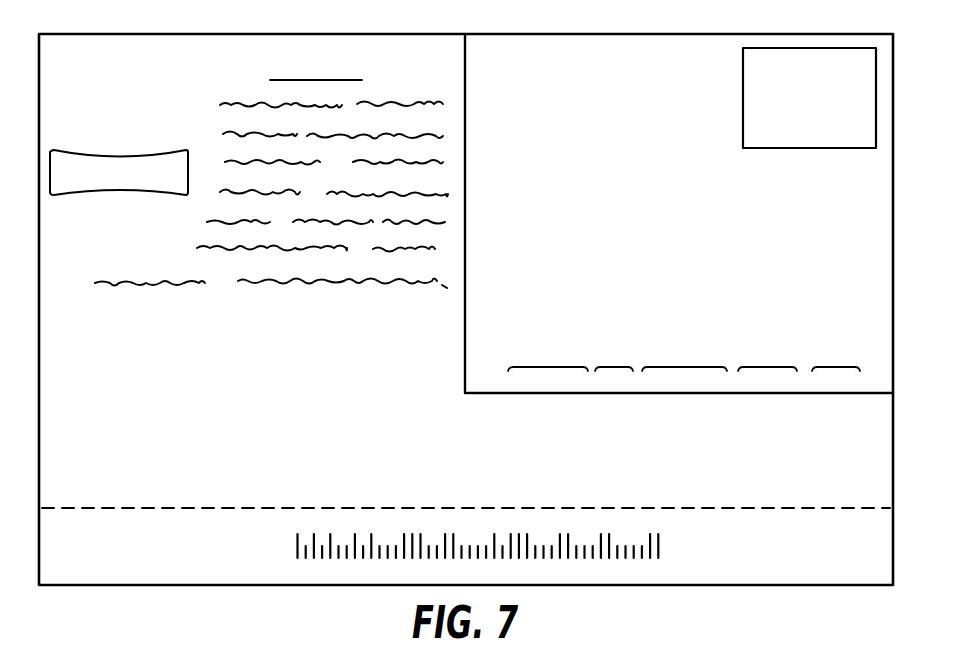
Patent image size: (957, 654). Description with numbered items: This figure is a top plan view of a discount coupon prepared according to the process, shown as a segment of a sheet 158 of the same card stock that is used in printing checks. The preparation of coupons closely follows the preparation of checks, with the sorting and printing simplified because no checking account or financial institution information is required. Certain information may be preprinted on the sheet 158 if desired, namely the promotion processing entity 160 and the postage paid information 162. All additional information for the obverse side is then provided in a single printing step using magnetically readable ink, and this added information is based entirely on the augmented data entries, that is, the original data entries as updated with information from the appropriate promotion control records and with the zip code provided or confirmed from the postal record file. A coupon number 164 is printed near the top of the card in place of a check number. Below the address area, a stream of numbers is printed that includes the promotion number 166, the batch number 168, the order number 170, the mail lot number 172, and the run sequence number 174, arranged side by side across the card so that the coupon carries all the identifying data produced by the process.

The sheet 158 is at (40, 350).
The promotion processing entity 160 is at (650, 118).
The postage paid information 162 is at (836, 50).
The coupon number 164 is at (565, 36).
The promotion number 166 is at (553, 367).
The batch number 168 is at (612, 367).
The order number 170 is at (685, 367).
The mail lot number 172 is at (768, 367).
The run sequence number 174 is at (835, 367).